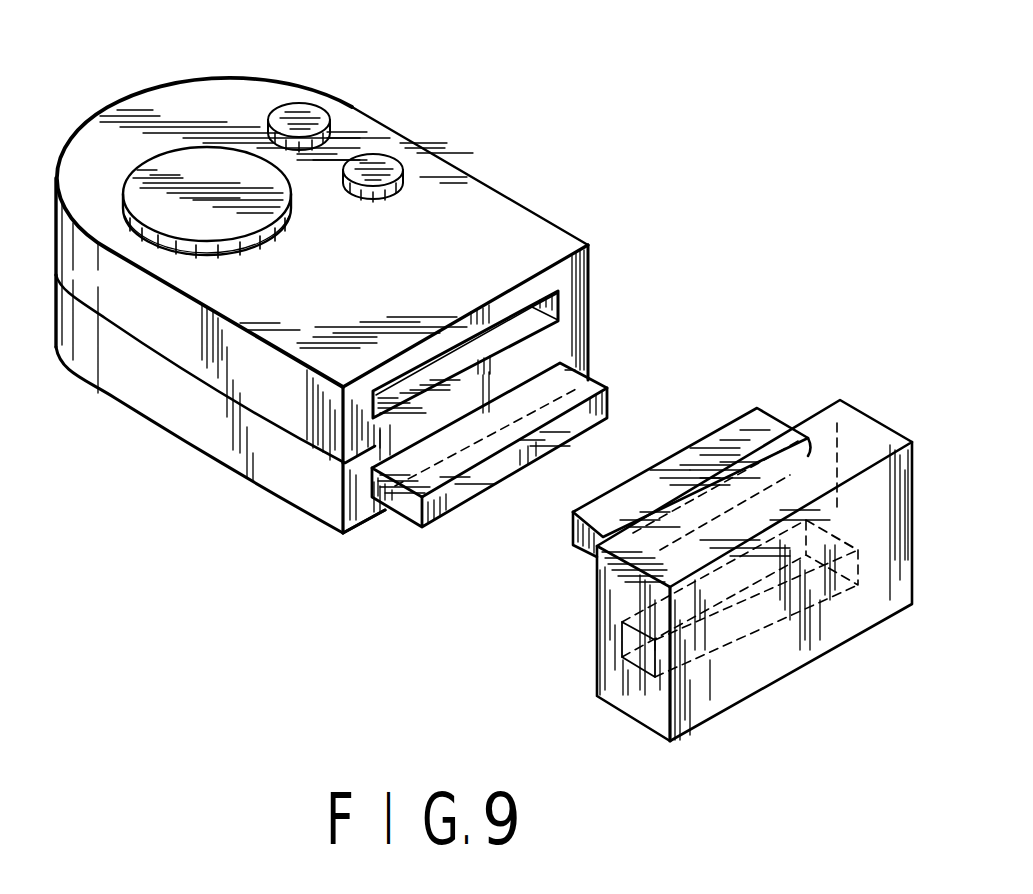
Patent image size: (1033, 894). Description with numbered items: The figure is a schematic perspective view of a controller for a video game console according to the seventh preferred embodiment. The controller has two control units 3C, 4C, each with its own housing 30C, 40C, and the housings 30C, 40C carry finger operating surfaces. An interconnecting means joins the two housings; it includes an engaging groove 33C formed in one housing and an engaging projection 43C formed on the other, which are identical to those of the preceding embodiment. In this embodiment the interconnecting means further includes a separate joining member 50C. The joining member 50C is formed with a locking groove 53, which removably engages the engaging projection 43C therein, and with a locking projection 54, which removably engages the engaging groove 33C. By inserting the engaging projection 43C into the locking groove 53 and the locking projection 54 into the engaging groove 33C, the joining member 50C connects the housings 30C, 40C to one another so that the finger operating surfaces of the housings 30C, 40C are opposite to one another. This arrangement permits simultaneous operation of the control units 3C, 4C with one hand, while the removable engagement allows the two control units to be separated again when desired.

The control unit 3C is at (453, 117).
The housing 30C is at (493, 197).
The housing 40C is at (185, 432).
The control unit 4C is at (221, 481).
The engaging groove 33C is at (549, 305).
The engaging projection 43C is at (587, 390).
The joining member 50C is at (858, 425).
The locking projection 54 is at (752, 433).
The locking groove 53 is at (597, 642).